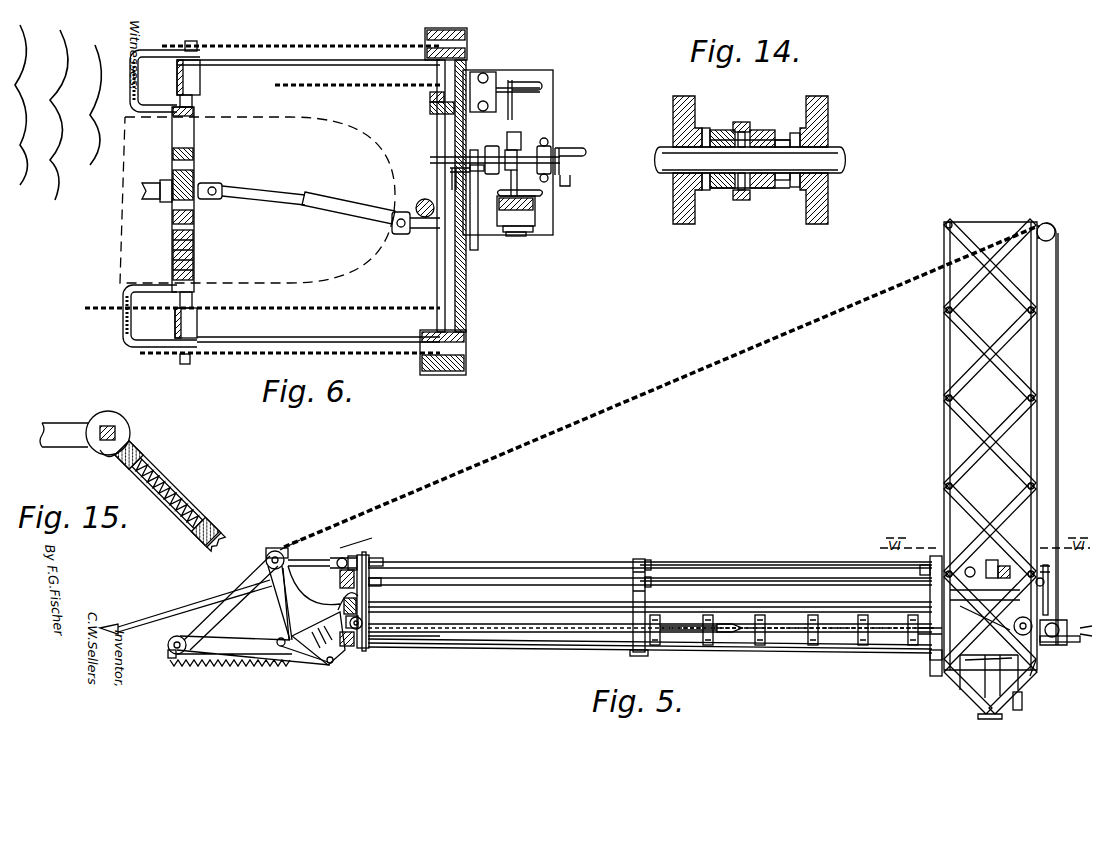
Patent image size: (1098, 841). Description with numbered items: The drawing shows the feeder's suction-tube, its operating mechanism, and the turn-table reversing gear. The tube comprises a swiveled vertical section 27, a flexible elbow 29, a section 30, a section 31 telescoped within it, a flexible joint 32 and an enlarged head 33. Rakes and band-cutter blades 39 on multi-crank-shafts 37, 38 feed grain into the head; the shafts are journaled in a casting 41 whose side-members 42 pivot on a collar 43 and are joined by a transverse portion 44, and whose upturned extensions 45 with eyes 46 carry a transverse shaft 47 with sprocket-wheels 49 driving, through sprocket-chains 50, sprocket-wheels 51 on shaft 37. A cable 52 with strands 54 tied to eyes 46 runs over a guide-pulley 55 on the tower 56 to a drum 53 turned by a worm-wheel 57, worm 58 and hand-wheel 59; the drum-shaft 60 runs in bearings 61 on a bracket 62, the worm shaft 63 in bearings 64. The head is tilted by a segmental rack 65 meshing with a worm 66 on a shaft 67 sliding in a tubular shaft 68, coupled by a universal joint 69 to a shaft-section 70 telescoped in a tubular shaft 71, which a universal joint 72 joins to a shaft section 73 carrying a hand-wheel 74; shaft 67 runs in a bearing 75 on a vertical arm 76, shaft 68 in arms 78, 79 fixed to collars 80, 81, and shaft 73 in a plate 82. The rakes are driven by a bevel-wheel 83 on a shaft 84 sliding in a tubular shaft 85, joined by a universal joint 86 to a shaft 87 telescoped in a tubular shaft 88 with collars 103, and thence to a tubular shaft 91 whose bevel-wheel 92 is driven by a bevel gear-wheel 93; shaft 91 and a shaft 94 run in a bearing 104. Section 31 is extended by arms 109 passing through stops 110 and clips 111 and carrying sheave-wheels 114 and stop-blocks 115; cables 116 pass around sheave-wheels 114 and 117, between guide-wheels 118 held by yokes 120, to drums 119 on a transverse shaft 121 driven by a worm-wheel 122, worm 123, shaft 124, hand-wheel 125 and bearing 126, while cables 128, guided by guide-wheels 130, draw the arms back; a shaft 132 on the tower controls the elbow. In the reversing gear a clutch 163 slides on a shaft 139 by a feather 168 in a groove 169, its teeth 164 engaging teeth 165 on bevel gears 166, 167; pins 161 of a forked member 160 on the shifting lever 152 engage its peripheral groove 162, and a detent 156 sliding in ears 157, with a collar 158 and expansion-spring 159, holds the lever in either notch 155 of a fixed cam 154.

In FIG. 5, the vertical section of the suction-tube 27 is at (982, 716).
In FIG. 5, the flexible elbow 29 is at (990, 662).
In FIG. 6, the suction-tube section 30 is at (118, 226).
In FIG. 5, the suction-tube section 30 is at (812, 660).
In FIG. 5, the telescoping suction-tube section 31 is at (504, 650).
In FIG. 5, the flexible joint 32 is at (342, 652).
In FIG. 5, the enlarged head 33 is at (176, 622).
In FIG. 5, the multi-crank-shaft 37 is at (172, 656).
In FIG. 5, the multi-crank-shaft 38 is at (282, 648).
In FIG. 5, the blades 39 is at (216, 668).
In FIG. 5, the casting 41 is at (246, 640).
In FIG. 5, the side-members 42 is at (235, 625).
In FIG. 5, the collar 43 is at (372, 650).
In FIG. 5, the transverse portion 44 is at (135, 630).
In FIG. 5, the upturned extensions 45 is at (275, 604).
In FIG. 5, the eyes 46 is at (278, 550).
In FIG. 5, the transverse shaft 47 is at (268, 554).
In FIG. 5, the sprocket-wheels 49 is at (266, 558).
In FIG. 5, the endless sprocket-chains 50 is at (224, 590).
In FIG. 5, the sprocket-wheels 51 is at (170, 650).
In FIG. 5, the cable 52 is at (646, 390).
In FIG. 6, the drum 53 is at (548, 230).
In FIG. 5, the drum 53 is at (1060, 625).
In FIG. 5, the cable strands 54 is at (360, 546).
In FIG. 5, the guide-pulley 55 is at (1048, 224).
In FIG. 6, the tower 56 is at (307, 62).
In FIG. 5, the tower 56 is at (990, 444).
In FIG. 6, the worm-wheel 57 is at (530, 190).
In FIG. 6, the worm 58 is at (526, 148).
In FIG. 6, the hand-wheel 59 is at (565, 182).
In FIG. 6, the drum-shaft 60 is at (510, 236).
In FIG. 6, the bearings 61 is at (512, 150).
In FIG. 5, the bearings 61 is at (1056, 645).
In FIG. 6, the bracket 62 is at (545, 212).
In FIG. 6, the shaft 63 is at (484, 160).
In FIG. 6, the bearings 64 is at (490, 150).
In FIG. 5, the segmental rack 65 is at (340, 596).
In FIG. 5, the worm 66 is at (344, 576).
In FIG. 5, the shaft 67 is at (476, 585).
In FIG. 5, the tubular shaft 68 is at (816, 582).
In FIG. 6, the universal joint 69 is at (214, 188).
In FIG. 6, the short shaft-section 70 is at (254, 192).
In FIG. 6, the tubular shaft 71 is at (320, 196).
In FIG. 5, the tubular shaft 71 is at (985, 615).
In FIG. 6, the universal joint 72 is at (392, 228).
In FIG. 5, the universal joint 72 is at (950, 596).
In FIG. 6, the short shaft section 73 is at (420, 230).
In FIG. 6, the hand-wheel 74 is at (478, 270).
In FIG. 5, the hand-wheel 74 is at (1050, 596).
In FIG. 5, the bearing 75 is at (374, 590).
In FIG. 5, the vertical arm 76 is at (372, 560).
In FIG. 5, the arm 78 is at (640, 558).
In FIG. 6, the arm 79 is at (172, 222).
In FIG. 5, the arm 79 is at (930, 580).
In FIG. 5, the collar 80 is at (638, 658).
In FIG. 6, the collar 81 is at (172, 256).
In FIG. 6, the plate 82 is at (464, 304).
In FIG. 5, the bevel-wheel 83 is at (292, 548).
In FIG. 5, the shaft 84 is at (322, 560).
In FIG. 5, the tubular shaft 85 is at (342, 554).
In FIG. 5, the universal joint 86 is at (360, 556).
In FIG. 5, the shaft 87 is at (452, 562).
In FIG. 6, the tubular shaft 88 is at (142, 190).
In FIG. 5, the tubular shaft 88 is at (768, 564).
In FIG. 5, the short tubular shaft 91 is at (968, 566).
In FIG. 5, the bevel-wheel 92 is at (1010, 570).
In FIG. 5, the bevel gear-wheel 93 is at (1048, 582).
In FIG. 6, the shaft 94 is at (416, 202).
In FIG. 5, the shaft 94 is at (1022, 706).
In FIG. 6, the collars 103 is at (168, 185).
In FIG. 5, the collars 103 is at (652, 562).
In FIG. 5, the bearing 104 is at (1050, 566).
In FIG. 5, the arms 109 is at (568, 640).
In FIG. 5, the stops 110 is at (658, 646).
In FIG. 5, the clips 111 is at (764, 620).
In FIG. 5, the sheave-wheels 114 is at (728, 636).
In FIG. 5, the stop-blocks 115 is at (692, 634).
In FIG. 6, the cables 116 is at (292, 46).
In FIG. 5, the cables 116 is at (848, 640).
In FIG. 5, the sheave-wheels 117 is at (392, 645).
In FIG. 5, the guide-wheels 118 is at (934, 660).
In FIG. 6, the drums 119 is at (440, 28).
In FIG. 5, the drums 119 is at (1036, 672).
In FIG. 6, the yokes 120 is at (158, 52).
In FIG. 5, the yokes 120 is at (925, 645).
In FIG. 6, the transverse shaft 121 is at (438, 268).
In FIG. 6, the worm-wheel 122 is at (438, 108).
In FIG. 6, the worm 123 is at (430, 98).
In FIG. 6, the shaft 124 is at (502, 84).
In FIG. 6, the hand-wheel 125 is at (512, 110).
In FIG. 6, the bearing 126 is at (482, 76).
In FIG. 5, the bearing 126 is at (1032, 636).
In FIG. 6, the cables 128 is at (306, 88).
In FIG. 6, the guide-wheels 130 is at (197, 42).
In FIG. 6, the transverse shaft 132 is at (194, 101).
In FIG. 14, the shaft 139 is at (842, 158).
In FIG. 15, the shifting lever 152 is at (68, 428).
In FIG. 15, the fixed cam 154 is at (130, 426).
In FIG. 15, the notches 155 is at (100, 458).
In FIG. 15, the detent 156 is at (214, 528).
In FIG. 15, the ears 157 is at (124, 460).
In FIG. 15, the collar 158 is at (158, 476).
In FIG. 15, the expansion-spring 159 is at (195, 494).
In FIG. 14, the forked depending member 160 is at (742, 122).
In FIG. 14, the pins 161 is at (748, 128).
In FIG. 14, the peripheral groove 162 is at (728, 190).
In FIG. 14, the clutch 163 is at (706, 190).
In FIG. 14, the teeth 164 is at (778, 190).
In FIG. 14, the teeth 165 is at (705, 128).
In FIG. 14, the bevel gear 166 is at (828, 124).
In FIG. 14, the bevel gear 167 is at (675, 118).
In FIG. 14, the feather 168 is at (765, 132).
In FIG. 14, the longitudinal groove 169 is at (718, 132).